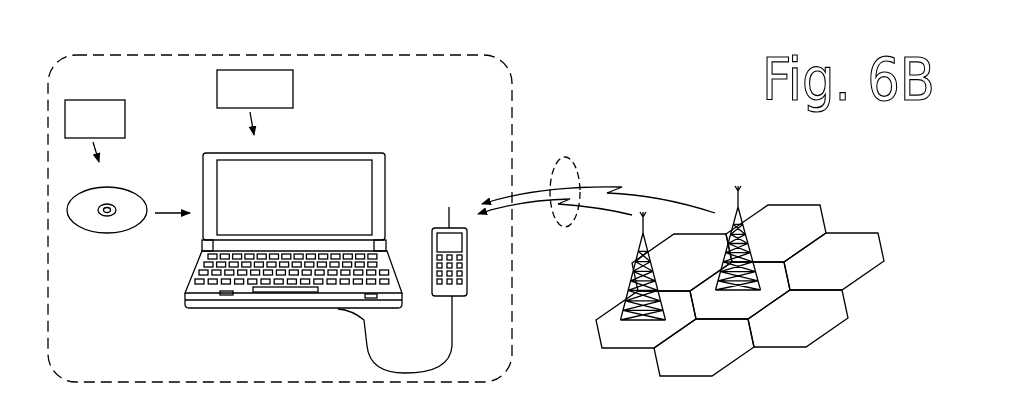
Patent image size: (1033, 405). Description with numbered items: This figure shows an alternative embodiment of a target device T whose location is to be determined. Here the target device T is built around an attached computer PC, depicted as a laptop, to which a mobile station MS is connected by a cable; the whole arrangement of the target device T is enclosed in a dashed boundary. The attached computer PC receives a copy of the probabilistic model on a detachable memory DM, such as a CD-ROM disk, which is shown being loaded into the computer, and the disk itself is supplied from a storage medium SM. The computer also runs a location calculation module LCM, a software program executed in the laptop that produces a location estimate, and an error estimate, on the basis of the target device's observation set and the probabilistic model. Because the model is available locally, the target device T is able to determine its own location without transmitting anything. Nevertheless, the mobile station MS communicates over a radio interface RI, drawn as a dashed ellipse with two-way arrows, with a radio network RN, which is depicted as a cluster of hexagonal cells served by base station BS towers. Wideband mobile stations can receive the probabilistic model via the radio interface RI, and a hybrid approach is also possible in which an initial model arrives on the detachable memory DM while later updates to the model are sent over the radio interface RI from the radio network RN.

The target device T is at (511, 113).
The storage medium SM is at (95, 131).
The location calculation module LCM is at (255, 102).
The detachable memory DM is at (118, 186).
The attached computer PC is at (385, 157).
The mobile station MS is at (441, 224).
The radio interface RI is at (567, 157).
The base station BS is at (691, 266).
The radio network RN is at (824, 340).